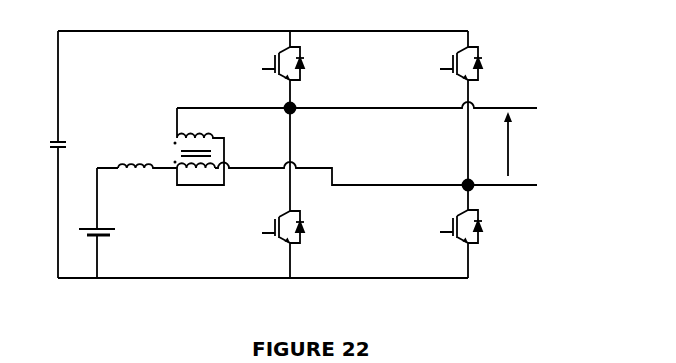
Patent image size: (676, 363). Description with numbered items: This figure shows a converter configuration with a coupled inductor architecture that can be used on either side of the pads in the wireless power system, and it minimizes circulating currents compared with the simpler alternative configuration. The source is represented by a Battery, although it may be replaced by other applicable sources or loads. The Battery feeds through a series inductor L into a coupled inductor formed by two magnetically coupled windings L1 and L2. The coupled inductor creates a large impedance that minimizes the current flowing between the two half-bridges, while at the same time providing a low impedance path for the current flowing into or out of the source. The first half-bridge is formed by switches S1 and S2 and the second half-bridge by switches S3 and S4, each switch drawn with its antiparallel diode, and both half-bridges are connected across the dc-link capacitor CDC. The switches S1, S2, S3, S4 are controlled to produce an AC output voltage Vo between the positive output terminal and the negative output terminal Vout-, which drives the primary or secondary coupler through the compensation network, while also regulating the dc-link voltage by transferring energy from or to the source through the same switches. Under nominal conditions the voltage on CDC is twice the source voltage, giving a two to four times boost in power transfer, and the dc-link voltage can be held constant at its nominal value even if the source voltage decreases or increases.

The switch S1 is at (266, 63).
The switch S2 is at (266, 227).
The switch S3 is at (448, 63).
The switch S4 is at (447, 226).
The inductor L is at (147, 175).
The coupled inductor winding L1 is at (195, 174).
The coupled inductor winding L2 is at (232, 146).
The dc-link capacitor CDC is at (71, 148).
The battery Battery is at (124, 223).
The negative output terminal Vout- is at (530, 198).
The output voltage Vo is at (525, 144).